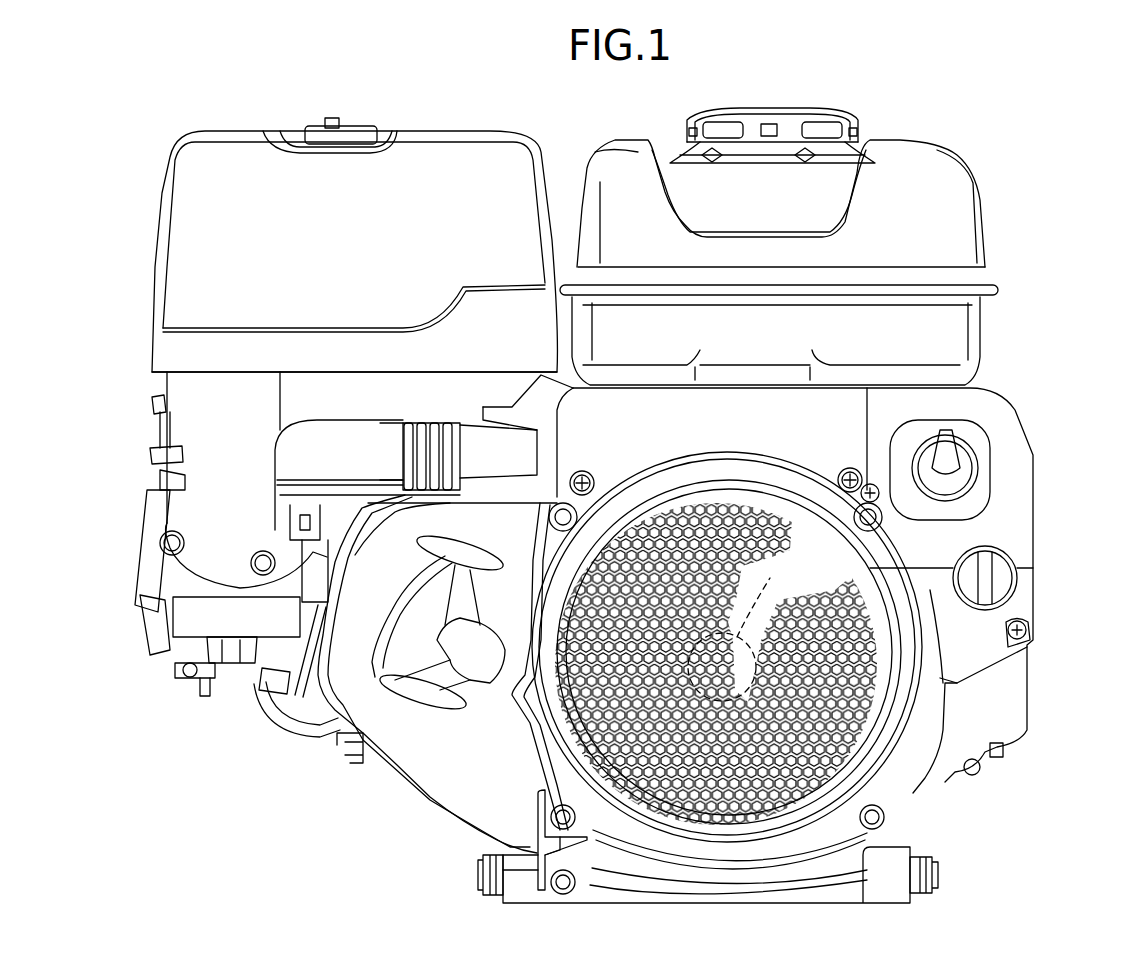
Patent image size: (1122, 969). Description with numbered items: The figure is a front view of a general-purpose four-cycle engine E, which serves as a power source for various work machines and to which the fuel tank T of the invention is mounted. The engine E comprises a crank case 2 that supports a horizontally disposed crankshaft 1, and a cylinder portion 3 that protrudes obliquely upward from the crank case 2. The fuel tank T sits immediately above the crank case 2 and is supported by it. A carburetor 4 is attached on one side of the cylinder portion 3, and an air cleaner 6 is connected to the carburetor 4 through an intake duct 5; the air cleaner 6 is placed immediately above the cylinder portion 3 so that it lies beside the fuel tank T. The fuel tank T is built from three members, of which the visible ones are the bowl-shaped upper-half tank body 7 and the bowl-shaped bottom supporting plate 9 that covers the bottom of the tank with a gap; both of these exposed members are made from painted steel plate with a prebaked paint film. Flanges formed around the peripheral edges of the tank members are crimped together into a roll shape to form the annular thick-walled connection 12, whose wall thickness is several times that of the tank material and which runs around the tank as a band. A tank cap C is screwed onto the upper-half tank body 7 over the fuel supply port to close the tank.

The crankshaft 1 is at (717, 665).
The crank case 2 is at (893, 870).
The cylinder portion 3 is at (263, 690).
The carburetor 4 is at (203, 620).
The intake duct 5 is at (196, 440).
The air cleaner 6 is at (354, 243).
The upper-half tank body 7 is at (958, 228).
The bottom supporting plate 9 is at (962, 330).
The annular thick-walled connection 12 is at (995, 290).
The tank cap C is at (840, 130).
The fuel tank T is at (812, 234).
The general-purpose engine E is at (683, 617).